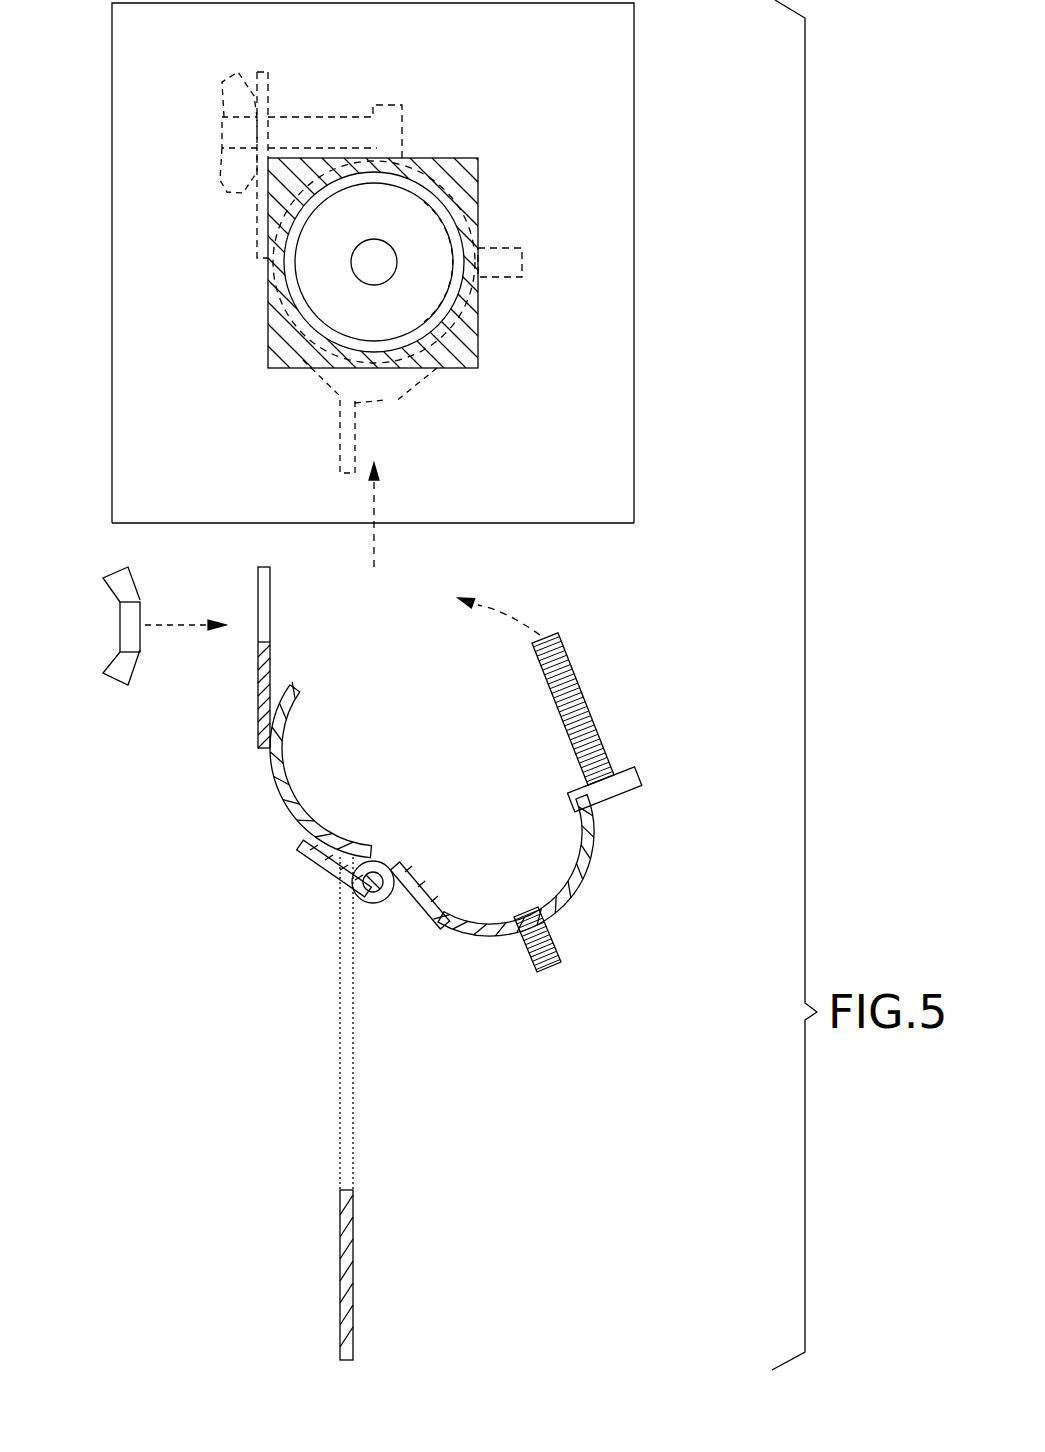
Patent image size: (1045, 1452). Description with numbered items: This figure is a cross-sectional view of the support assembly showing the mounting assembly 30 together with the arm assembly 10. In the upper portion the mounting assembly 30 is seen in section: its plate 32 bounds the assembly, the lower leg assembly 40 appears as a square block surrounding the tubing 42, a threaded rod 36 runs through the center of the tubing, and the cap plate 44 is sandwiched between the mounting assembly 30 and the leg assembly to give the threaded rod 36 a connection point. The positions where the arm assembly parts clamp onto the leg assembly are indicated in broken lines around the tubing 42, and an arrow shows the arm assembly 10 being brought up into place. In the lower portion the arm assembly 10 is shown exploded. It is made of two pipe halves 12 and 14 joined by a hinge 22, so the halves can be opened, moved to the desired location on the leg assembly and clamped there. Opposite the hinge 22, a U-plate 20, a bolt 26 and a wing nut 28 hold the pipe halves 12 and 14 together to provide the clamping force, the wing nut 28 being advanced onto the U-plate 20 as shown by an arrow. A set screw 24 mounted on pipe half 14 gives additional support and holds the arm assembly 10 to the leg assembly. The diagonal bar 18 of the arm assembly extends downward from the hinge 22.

The arm assembly 10 is at (150, 248).
The pipe half 12 is at (296, 820).
The pipe half 14 is at (587, 853).
The diagonal bar 18 is at (338, 455).
The U-plate 20 is at (262, 70).
The hinge 22 is at (390, 404).
The set screw 24 is at (523, 258).
The bolt 26 is at (315, 128).
The wing nut 28 is at (238, 72).
The mounting assembly 30 is at (675, 75).
The plate 32 is at (604, 458).
The threaded rod 36 is at (374, 262).
The lower leg assembly 40 is at (238, 378).
The tubing 42 is at (447, 233).
The cap plate 44 is at (463, 341).